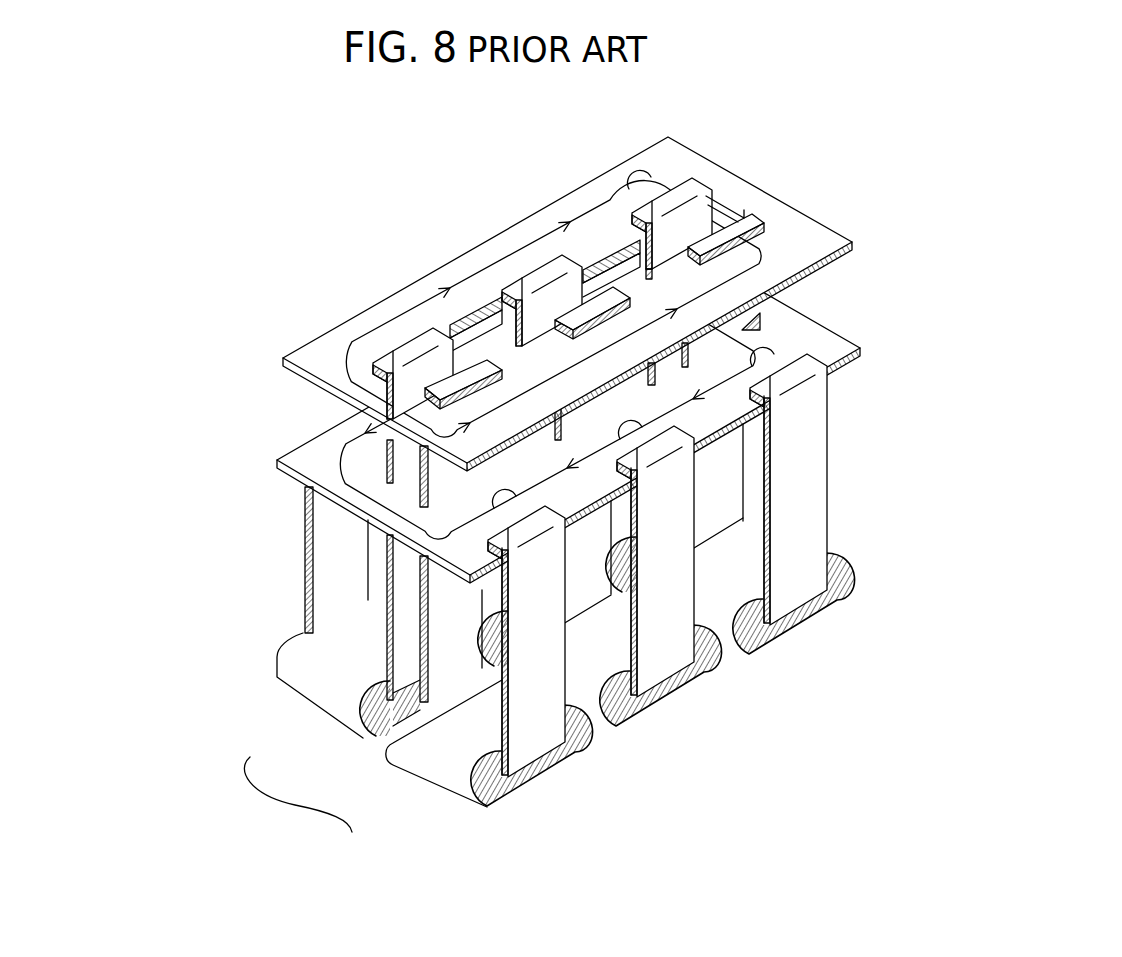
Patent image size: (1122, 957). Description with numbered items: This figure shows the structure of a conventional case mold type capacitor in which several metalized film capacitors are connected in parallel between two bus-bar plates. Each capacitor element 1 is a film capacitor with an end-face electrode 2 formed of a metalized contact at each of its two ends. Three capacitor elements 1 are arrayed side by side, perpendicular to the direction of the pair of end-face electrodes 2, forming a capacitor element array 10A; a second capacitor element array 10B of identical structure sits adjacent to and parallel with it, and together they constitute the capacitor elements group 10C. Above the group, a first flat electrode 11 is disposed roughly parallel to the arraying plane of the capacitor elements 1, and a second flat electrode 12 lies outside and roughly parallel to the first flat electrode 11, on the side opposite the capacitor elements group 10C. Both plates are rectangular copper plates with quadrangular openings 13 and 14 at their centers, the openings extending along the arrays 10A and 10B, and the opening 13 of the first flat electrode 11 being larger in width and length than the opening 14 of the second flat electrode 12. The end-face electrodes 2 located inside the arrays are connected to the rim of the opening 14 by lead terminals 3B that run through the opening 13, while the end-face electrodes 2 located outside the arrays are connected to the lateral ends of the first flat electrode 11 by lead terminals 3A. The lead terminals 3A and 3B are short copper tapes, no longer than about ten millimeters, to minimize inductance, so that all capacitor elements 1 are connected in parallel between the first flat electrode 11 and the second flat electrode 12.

The capacitor element 1 is at (342, 632).
The end-face electrode 2 is at (277, 677).
The lead terminal 3A is at (302, 565).
The lead terminal 3B is at (412, 348).
The capacitor element array 10A is at (418, 765).
The capacitor element array 10B is at (312, 712).
The capacitor elements group 10C is at (298, 799).
The first flat electrode 11 is at (830, 336).
The second flat electrode 12 is at (815, 236).
The opening 13 is at (744, 322).
The opening 14 is at (720, 212).